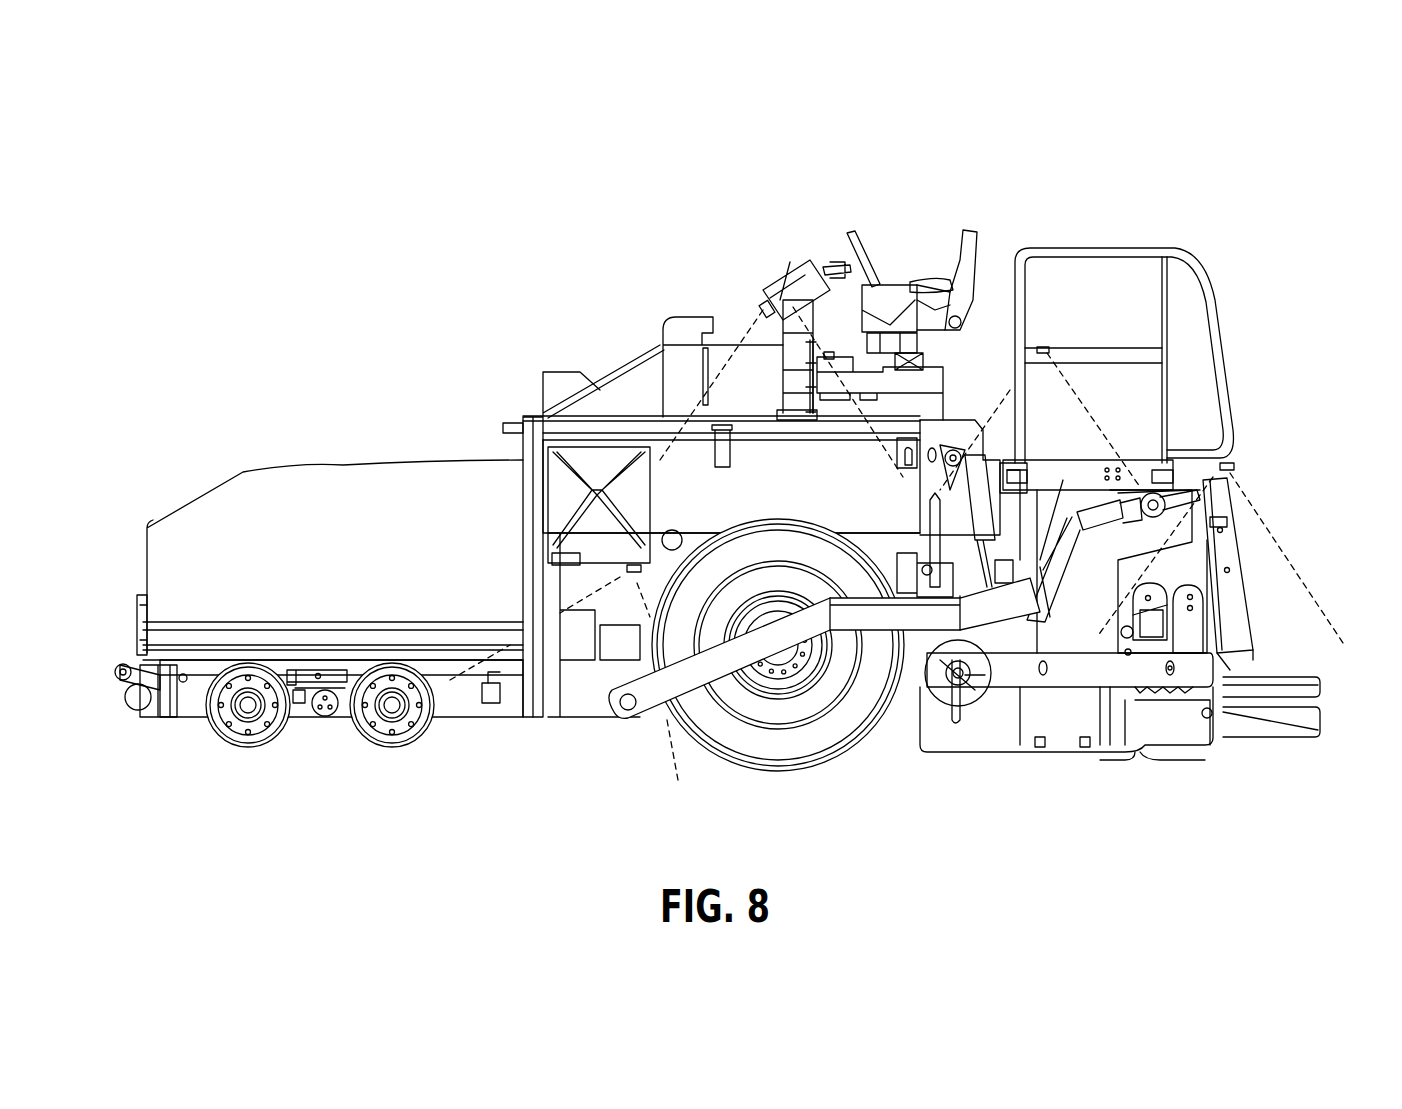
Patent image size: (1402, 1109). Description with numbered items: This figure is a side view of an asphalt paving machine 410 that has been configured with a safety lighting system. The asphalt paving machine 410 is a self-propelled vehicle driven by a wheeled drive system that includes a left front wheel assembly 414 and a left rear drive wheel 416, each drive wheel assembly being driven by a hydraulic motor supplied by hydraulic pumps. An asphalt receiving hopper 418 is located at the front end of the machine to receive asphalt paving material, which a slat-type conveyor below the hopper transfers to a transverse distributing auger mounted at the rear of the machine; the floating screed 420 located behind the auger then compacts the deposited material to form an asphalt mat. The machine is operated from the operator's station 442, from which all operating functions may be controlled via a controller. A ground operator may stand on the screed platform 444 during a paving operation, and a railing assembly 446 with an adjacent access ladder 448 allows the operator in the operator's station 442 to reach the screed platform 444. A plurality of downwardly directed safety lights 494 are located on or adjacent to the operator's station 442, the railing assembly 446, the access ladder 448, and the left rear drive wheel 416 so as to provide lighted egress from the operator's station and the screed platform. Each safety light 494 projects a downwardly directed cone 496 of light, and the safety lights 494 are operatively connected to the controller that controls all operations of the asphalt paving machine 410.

The asphalt paving machine 410 is at (868, 508).
The left front wheel assembly 414 is at (326, 742).
The left rear drive wheel 416 is at (842, 768).
The asphalt receiving hopper 418 is at (330, 458).
The floating screed 420 is at (1063, 768).
The operator's station 442 is at (940, 247).
The screed platform 444 is at (1278, 668).
The railing assembly 446 is at (1226, 320).
The access ladder 448 is at (1257, 620).
The downwardly directed safety lights 494 is at (767, 298).
The downwardly directed cone of light 496 is at (753, 316).